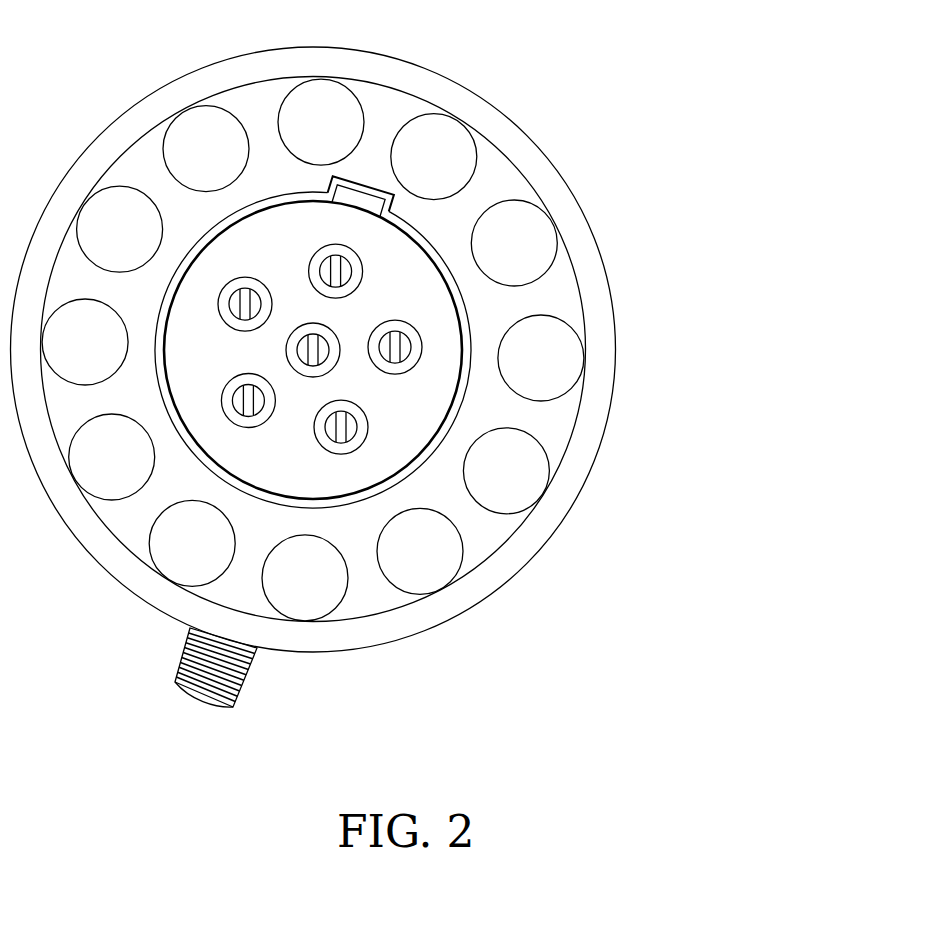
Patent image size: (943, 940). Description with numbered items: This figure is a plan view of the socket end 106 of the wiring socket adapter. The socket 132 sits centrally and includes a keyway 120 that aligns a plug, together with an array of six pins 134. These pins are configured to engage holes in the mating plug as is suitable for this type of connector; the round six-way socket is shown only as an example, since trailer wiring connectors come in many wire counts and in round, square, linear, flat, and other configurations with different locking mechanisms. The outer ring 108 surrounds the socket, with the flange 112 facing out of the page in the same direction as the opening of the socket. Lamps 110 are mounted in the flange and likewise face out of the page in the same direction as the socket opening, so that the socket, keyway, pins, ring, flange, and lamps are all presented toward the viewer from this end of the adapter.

The socket end 106 is at (683, 382).
The outer ring 108 is at (333, 652).
The lamps 110 is at (497, 487).
The flange 112 is at (485, 190).
The keyway 120 is at (358, 203).
The socket 132 is at (438, 315).
The pins 134 is at (422, 348).